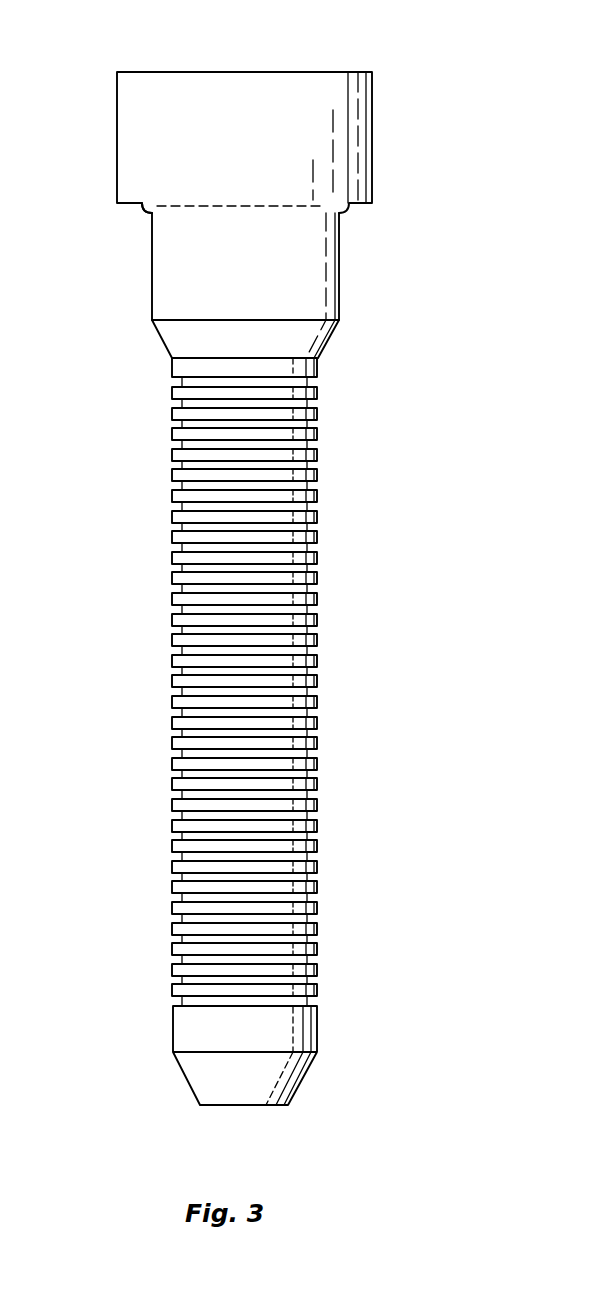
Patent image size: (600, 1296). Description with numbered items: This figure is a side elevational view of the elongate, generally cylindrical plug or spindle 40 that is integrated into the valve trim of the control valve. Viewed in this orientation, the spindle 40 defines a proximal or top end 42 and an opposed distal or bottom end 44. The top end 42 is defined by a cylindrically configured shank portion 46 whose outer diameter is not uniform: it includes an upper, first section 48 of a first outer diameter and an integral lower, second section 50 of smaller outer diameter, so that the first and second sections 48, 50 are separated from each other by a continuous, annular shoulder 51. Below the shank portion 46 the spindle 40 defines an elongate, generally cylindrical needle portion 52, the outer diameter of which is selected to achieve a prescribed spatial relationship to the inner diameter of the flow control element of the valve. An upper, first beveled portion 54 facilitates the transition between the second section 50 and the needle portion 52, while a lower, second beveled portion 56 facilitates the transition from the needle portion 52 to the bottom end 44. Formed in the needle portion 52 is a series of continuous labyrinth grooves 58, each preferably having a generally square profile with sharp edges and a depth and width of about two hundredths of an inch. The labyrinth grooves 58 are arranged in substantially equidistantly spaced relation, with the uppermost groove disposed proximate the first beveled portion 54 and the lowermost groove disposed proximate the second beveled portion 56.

The plug or spindle 40 is at (388, 429).
The top end 42 is at (304, 72).
The bottom end 44 is at (268, 1105).
The shank portion 46 is at (385, 229).
The first section 48 is at (372, 117).
The second section 50 is at (339, 268).
The annular shoulder 51 is at (139, 205).
The needle portion 52 is at (334, 645).
The first beveled portion 54 is at (154, 333).
The second beveled portion 56 is at (183, 1077).
The labyrinth grooves 58 is at (314, 855).